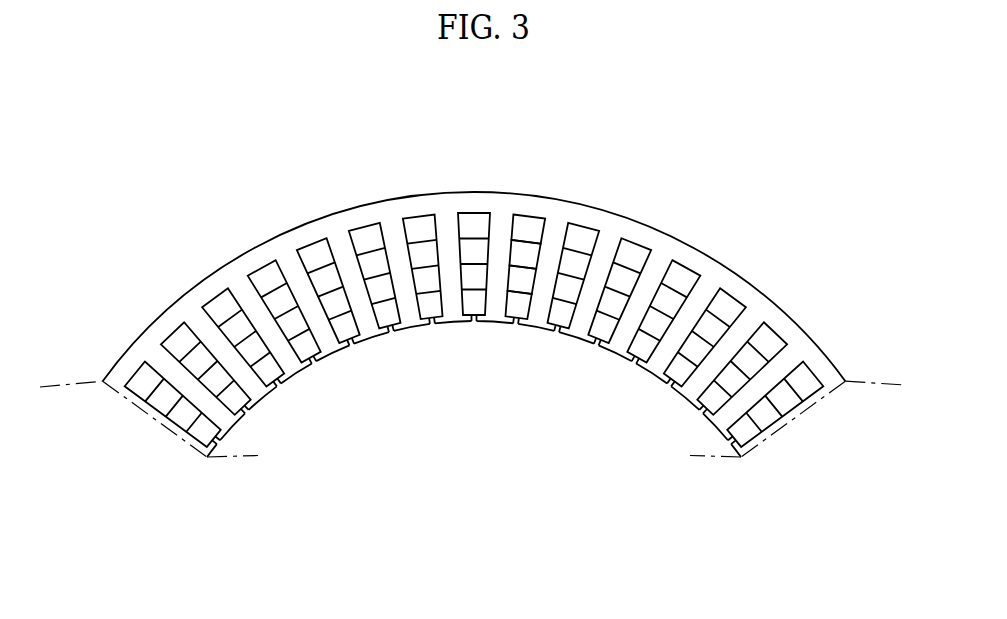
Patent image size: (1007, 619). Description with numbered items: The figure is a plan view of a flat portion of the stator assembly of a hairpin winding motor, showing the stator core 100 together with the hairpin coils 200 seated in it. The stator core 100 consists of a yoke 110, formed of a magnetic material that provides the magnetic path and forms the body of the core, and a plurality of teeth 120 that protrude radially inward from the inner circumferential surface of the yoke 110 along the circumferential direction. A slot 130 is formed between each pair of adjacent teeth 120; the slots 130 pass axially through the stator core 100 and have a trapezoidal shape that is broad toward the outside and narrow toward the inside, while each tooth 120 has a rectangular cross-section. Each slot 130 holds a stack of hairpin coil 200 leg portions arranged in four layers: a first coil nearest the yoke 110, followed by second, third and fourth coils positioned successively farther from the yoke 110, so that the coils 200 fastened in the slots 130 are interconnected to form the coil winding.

The stator core 100 is at (630, 189).
The yoke 110 is at (362, 215).
The teeth 120 is at (398, 262).
The slots 130 is at (367, 262).
The hairpin coil 200 is at (672, 512).